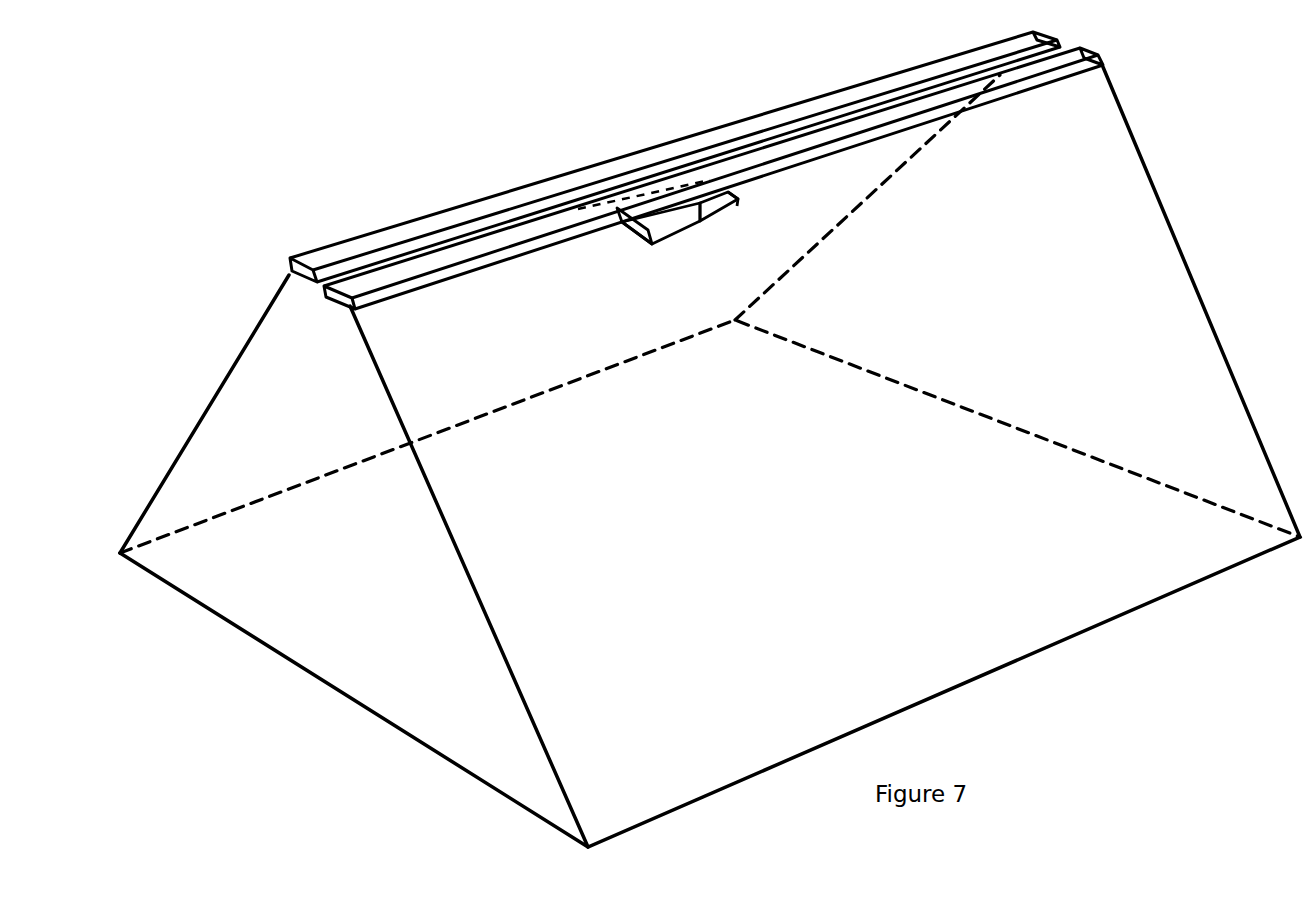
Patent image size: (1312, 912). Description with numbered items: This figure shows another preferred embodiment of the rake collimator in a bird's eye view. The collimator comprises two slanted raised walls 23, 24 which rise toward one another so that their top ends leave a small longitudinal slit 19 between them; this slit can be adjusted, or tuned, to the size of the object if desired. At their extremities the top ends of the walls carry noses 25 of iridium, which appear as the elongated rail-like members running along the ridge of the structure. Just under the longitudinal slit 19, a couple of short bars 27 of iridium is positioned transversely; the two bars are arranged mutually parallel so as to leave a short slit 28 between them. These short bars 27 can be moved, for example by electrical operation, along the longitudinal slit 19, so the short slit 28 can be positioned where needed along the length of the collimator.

The longitudinal slit 19 is at (318, 288).
The slanted raised wall 23 is at (602, 710).
The slanted raised wall 24 is at (354, 561).
The nose 25 is at (323, 253).
The short bar 27 is at (724, 221).
The short slit 28 is at (695, 225).